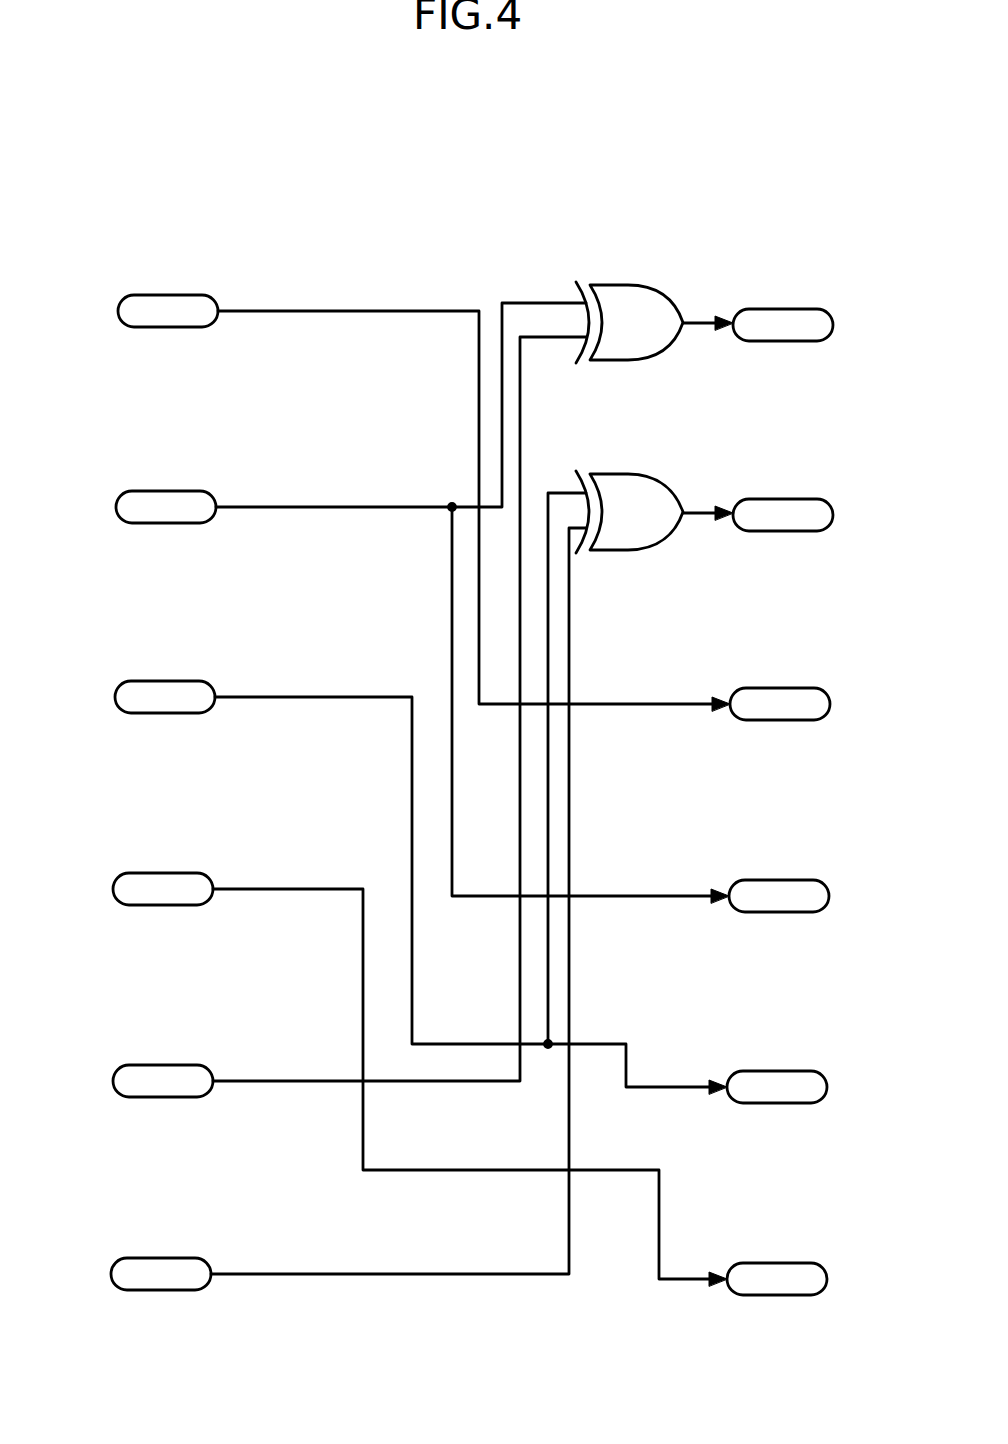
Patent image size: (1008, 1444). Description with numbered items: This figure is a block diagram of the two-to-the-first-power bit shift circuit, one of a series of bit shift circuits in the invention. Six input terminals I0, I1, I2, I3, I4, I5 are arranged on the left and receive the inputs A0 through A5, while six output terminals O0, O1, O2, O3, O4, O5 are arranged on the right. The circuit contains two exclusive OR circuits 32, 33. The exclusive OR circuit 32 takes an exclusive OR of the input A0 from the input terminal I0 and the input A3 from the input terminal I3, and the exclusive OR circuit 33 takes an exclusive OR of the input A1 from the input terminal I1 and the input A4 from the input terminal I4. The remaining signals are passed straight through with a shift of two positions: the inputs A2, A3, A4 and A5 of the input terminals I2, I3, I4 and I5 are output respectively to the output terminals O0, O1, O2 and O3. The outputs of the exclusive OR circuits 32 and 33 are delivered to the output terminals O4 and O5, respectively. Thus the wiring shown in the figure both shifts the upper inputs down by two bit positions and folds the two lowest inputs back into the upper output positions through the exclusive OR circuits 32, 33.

The exclusive OR circuit 32 is at (650, 495).
The exclusive OR circuit 33 is at (650, 306).
The input terminal I5 is at (137, 317).
The input terminal I4 is at (135, 513).
The input terminal I3 is at (135, 703).
The input terminal I2 is at (133, 895).
The input terminal I1 is at (133, 1087).
The input terminal I0 is at (131, 1280).
The output terminal O5 is at (818, 320).
The output terminal O4 is at (818, 510).
The output terminal O3 is at (815, 699).
The output terminal O2 is at (814, 891).
The output terminal O1 is at (812, 1082).
The output terminal O0 is at (812, 1274).